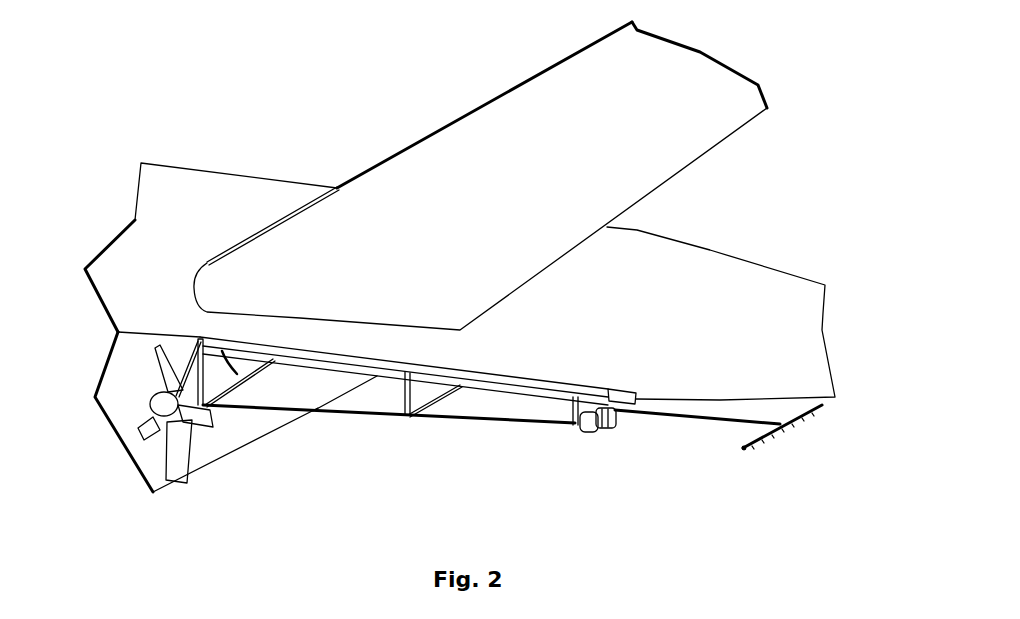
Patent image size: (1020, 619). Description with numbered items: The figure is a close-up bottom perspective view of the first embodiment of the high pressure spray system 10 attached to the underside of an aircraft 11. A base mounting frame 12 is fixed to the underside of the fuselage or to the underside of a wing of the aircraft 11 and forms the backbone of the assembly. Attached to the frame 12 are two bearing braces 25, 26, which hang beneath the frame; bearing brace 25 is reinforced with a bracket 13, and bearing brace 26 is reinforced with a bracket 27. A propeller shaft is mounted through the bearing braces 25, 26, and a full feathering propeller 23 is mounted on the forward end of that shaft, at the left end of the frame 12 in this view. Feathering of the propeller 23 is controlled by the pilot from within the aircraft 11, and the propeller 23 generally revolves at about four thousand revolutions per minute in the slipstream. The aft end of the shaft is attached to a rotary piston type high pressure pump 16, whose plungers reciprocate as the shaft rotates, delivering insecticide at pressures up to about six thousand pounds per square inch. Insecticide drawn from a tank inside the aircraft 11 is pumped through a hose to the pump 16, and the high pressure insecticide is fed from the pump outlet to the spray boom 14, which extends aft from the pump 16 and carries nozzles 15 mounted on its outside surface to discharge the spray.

The high pressure spray system 10 is at (353, 443).
The aircraft 11 is at (227, 207).
The base mounting frame 12 is at (506, 392).
The bracket 13 is at (224, 354).
The spray boom 14 is at (707, 418).
The nozzles 15 is at (752, 447).
The rotary piston type high pressure pump 16 is at (598, 435).
The full feathering propeller 23 is at (175, 462).
The bearing brace 25 is at (412, 413).
The bearing brace 26 is at (237, 375).
The bracket 27 is at (432, 400).